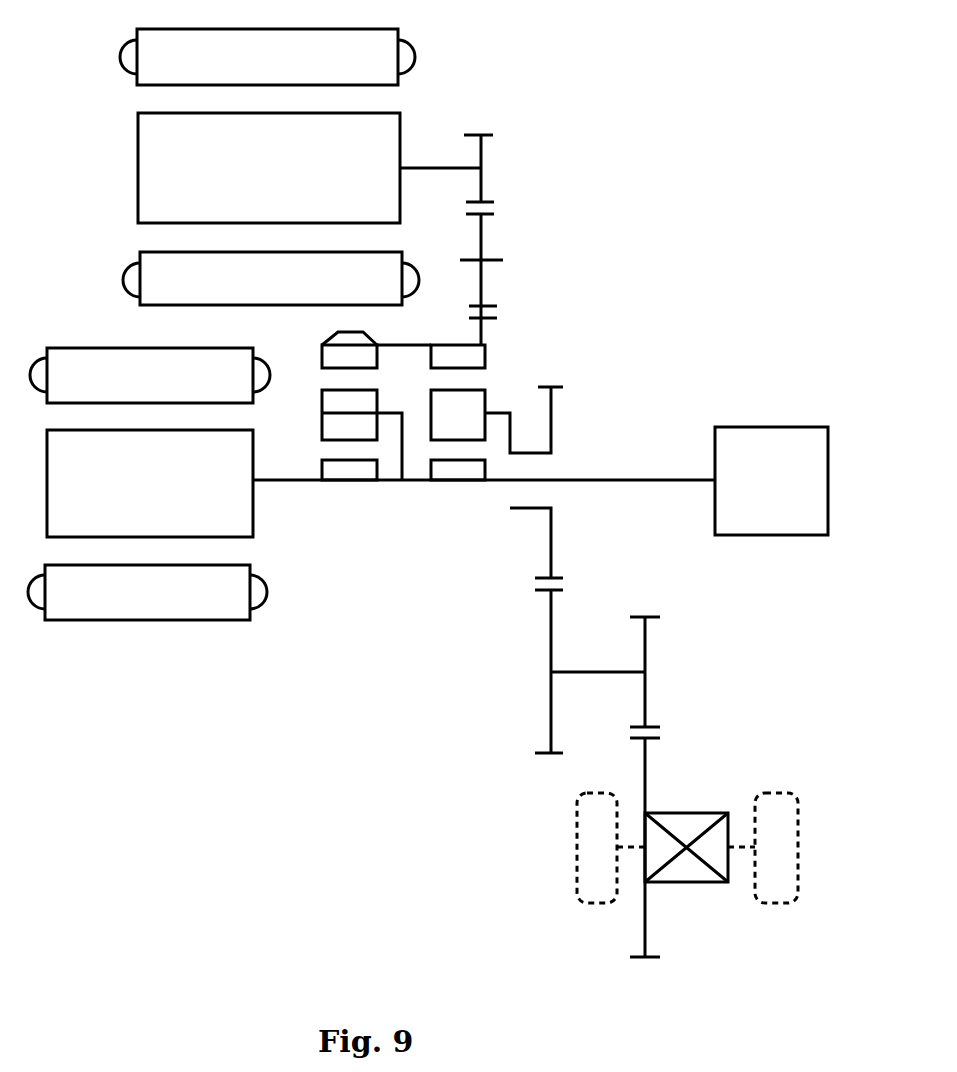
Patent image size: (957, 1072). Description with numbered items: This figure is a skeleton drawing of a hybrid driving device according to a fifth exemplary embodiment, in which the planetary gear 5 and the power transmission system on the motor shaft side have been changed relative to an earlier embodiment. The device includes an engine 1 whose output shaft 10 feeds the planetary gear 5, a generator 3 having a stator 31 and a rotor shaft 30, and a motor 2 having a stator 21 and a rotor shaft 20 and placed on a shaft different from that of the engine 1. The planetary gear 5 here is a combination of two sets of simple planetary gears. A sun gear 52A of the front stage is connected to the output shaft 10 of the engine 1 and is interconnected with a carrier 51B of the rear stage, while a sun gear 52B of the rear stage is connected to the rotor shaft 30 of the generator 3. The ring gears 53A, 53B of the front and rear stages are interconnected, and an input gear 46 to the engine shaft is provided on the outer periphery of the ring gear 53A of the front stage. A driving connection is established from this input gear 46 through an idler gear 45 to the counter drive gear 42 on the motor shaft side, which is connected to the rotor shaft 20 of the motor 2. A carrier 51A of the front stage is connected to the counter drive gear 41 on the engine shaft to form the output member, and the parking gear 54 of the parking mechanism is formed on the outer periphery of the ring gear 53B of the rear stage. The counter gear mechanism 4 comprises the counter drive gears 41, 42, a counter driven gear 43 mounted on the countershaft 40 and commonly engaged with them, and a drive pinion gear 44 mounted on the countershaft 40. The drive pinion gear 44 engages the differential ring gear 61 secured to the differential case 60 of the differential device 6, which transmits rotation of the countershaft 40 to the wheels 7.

The engine 1 is at (750, 425).
The motor 2 is at (116, 169).
The generator 3 is at (138, 626).
The counter gear mechanism 4 is at (603, 630).
The planetary gear 5 is at (411, 440).
The differential device 6 is at (693, 842).
The drive wheels 7 is at (577, 843).
The output shaft 10 is at (635, 478).
The rotor shaft 20 is at (429, 166).
The stator 21 is at (163, 305).
The rotor shaft 30 is at (282, 485).
The stator 31 is at (208, 620).
The countershaft 40 is at (600, 673).
The counter drive gear 41 is at (552, 560).
The counter drive gear 42 is at (485, 143).
The counter driven gear 43 is at (549, 610).
The drive pinion gear 44 is at (646, 635).
The idler gear 45 is at (482, 232).
The input gear 46 is at (484, 326).
The carrier 51A is at (497, 410).
The carrier 51B is at (340, 413).
The sun gear 52A is at (467, 485).
The sun gear 52B is at (353, 485).
The ring gear 53A is at (485, 353).
The ring gear 53B is at (322, 353).
The parking gear 54 is at (368, 337).
The differential case 60 is at (690, 883).
The differential ring gear 61 is at (647, 768).